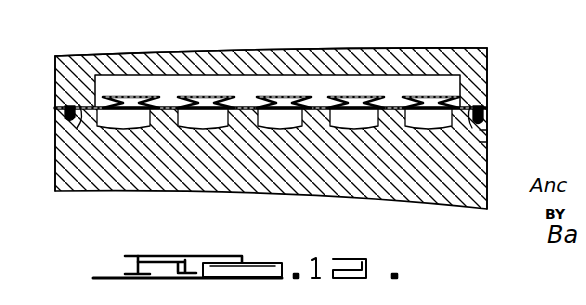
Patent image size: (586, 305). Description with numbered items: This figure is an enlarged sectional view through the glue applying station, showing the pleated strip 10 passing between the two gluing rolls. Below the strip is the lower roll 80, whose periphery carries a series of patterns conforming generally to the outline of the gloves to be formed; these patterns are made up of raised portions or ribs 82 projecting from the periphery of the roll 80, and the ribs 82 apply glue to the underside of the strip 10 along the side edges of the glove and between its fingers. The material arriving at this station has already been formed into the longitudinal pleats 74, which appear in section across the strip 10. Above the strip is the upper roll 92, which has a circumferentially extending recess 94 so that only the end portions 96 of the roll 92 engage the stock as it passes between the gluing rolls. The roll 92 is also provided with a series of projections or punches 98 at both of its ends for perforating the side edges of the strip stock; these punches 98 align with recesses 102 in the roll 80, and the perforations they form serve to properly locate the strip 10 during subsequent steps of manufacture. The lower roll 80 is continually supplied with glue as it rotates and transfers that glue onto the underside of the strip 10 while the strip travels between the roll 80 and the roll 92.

The strip 10 is at (100, 104).
The pleats 74 is at (268, 99).
The lower roll 80 is at (486, 173).
The raised portions or ribs 82 is at (244, 113).
The upper roll 92 is at (438, 53).
The circumferentially extending recess 94 is at (312, 78).
The end portions 96 is at (46, 66).
The projections or punches 98 is at (75, 121).
The recesses 102 is at (488, 137).